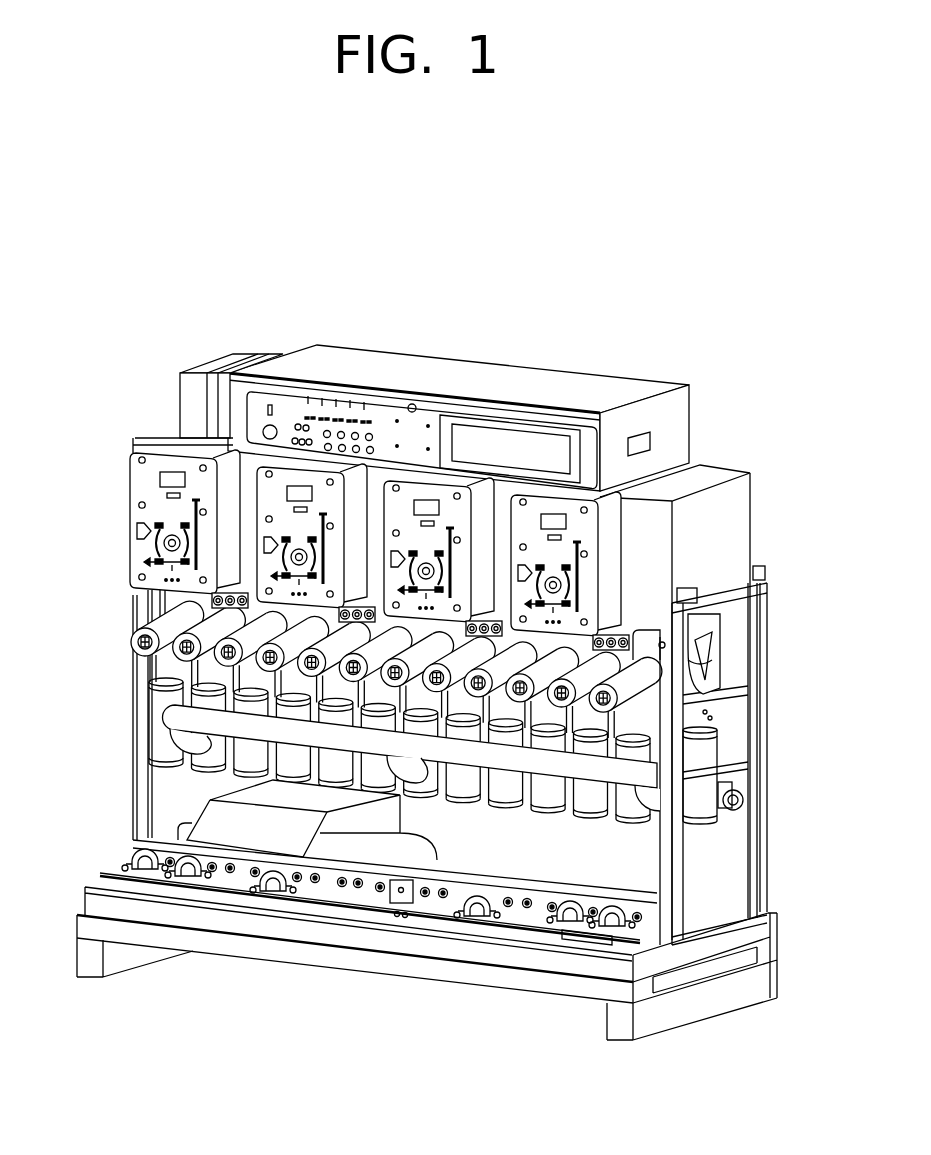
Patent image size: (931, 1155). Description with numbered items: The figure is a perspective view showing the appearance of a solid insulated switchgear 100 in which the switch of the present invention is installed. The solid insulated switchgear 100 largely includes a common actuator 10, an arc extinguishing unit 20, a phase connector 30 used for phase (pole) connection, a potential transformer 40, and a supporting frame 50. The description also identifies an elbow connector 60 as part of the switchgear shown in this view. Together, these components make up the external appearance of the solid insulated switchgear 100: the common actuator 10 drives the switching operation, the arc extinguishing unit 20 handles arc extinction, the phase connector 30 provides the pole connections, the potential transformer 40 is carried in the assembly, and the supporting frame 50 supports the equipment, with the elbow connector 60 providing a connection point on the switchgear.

The solid insulated switchgear 100 is at (122, 366).
The common actuator 10 is at (588, 566).
The arc extinguishing unit 20 is at (692, 638).
The phase connector 30 is at (693, 750).
The potential transformer 40 is at (217, 818).
The supporting frame 50 is at (663, 848).
The elbow connector 60 is at (167, 624).